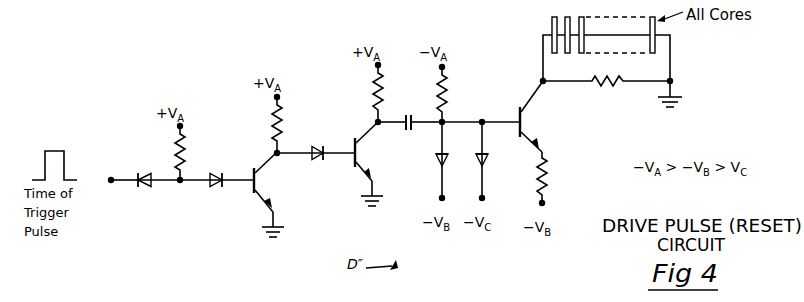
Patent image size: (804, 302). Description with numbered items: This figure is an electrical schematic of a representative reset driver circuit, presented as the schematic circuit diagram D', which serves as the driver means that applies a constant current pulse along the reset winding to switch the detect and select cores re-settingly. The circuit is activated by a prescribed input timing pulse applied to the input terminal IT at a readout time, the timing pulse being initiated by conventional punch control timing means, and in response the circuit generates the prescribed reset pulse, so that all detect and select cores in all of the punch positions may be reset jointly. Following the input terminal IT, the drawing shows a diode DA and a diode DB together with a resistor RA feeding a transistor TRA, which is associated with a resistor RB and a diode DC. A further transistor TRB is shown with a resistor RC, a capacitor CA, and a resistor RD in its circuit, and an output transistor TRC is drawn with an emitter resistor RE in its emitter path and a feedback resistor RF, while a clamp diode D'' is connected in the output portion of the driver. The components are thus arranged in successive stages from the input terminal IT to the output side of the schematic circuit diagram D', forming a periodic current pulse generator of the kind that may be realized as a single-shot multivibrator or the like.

The input terminal IT is at (111, 186).
The diode D_A DA is at (141, 187).
The diode D_B DB is at (218, 187).
The resistor R_A RA is at (187, 165).
The transistor TR_A TRA is at (250, 194).
The resistor R_B RB is at (281, 138).
The diode D_C DC is at (318, 160).
The transistor TR_B TRB is at (358, 170).
The resistor R_C RC is at (384, 99).
The capacitor C_A CA is at (408, 132).
The resistor R_D RD is at (448, 100).
The schematic circuit diagram D' is at (453, 161).
The clamp diode D'' is at (481, 160).
The transistor TR_C TRC is at (527, 126).
The emitter resistor R_E RE is at (548, 183).
The feedback resistor R_F RF is at (612, 88).